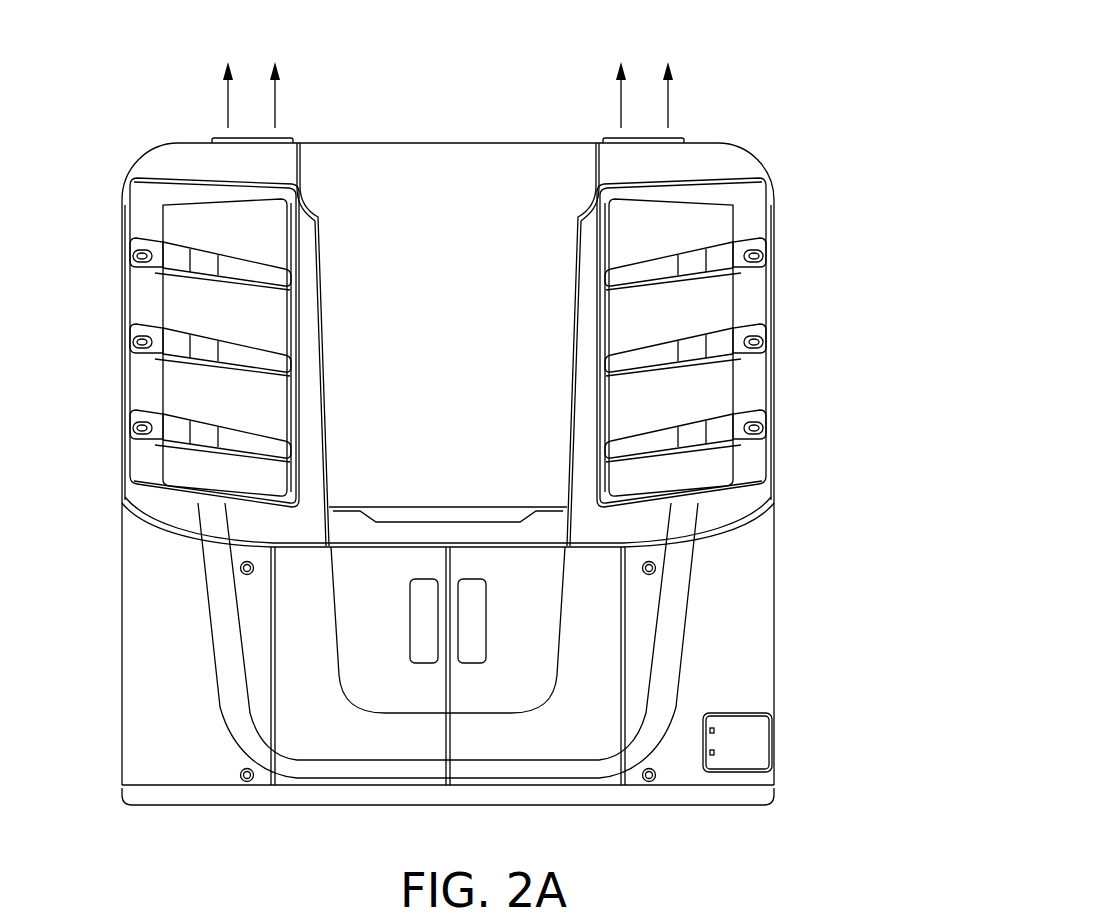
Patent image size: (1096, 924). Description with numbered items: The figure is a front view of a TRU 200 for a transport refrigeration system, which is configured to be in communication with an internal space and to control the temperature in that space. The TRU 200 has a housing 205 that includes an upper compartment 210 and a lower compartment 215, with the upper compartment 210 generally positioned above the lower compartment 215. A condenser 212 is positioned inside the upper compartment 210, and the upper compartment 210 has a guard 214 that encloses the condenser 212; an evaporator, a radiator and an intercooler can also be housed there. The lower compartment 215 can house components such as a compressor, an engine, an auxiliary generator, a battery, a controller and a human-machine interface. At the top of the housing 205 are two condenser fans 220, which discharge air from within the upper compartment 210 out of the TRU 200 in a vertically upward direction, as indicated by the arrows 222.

The TRU 200 is at (700, 50).
The housing 205 is at (775, 590).
The upper compartment 210 is at (777, 374).
The condenser 212 is at (178, 298).
The guard 214 is at (777, 249).
The lower compartment 215 is at (764, 656).
The condenser fans 220 is at (285, 140).
The arrows 222 is at (226, 96).